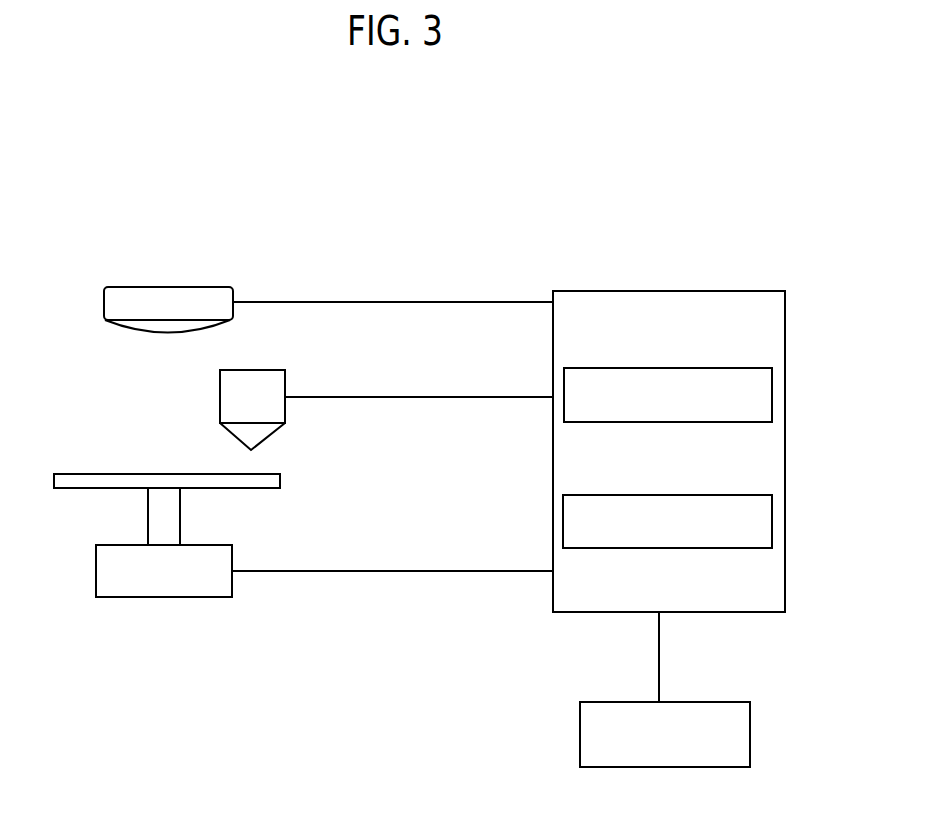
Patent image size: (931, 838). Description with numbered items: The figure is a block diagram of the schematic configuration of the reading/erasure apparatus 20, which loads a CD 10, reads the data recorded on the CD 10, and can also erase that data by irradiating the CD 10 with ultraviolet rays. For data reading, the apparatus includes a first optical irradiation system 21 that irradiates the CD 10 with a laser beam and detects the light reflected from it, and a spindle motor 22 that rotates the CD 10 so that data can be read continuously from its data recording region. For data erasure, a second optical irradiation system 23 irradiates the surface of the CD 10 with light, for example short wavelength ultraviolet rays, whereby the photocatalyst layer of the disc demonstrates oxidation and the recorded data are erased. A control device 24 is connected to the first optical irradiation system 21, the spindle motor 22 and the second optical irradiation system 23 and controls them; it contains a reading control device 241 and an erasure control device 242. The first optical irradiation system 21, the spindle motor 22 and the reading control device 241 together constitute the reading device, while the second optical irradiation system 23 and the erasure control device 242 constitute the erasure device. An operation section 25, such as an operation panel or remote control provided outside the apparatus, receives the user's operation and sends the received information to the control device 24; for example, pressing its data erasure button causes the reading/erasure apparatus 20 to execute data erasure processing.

The reading/erasure apparatus 20 is at (480, 203).
The second optical irradiation system 23 is at (203, 290).
The first optical irradiation system 21 is at (275, 392).
The CD 10 is at (73, 488).
The spindle motor 22 is at (148, 597).
The control device 24 is at (665, 303).
The reading control device 241 is at (673, 370).
The erasure control device 242 is at (673, 495).
The operation section 25 is at (750, 743).